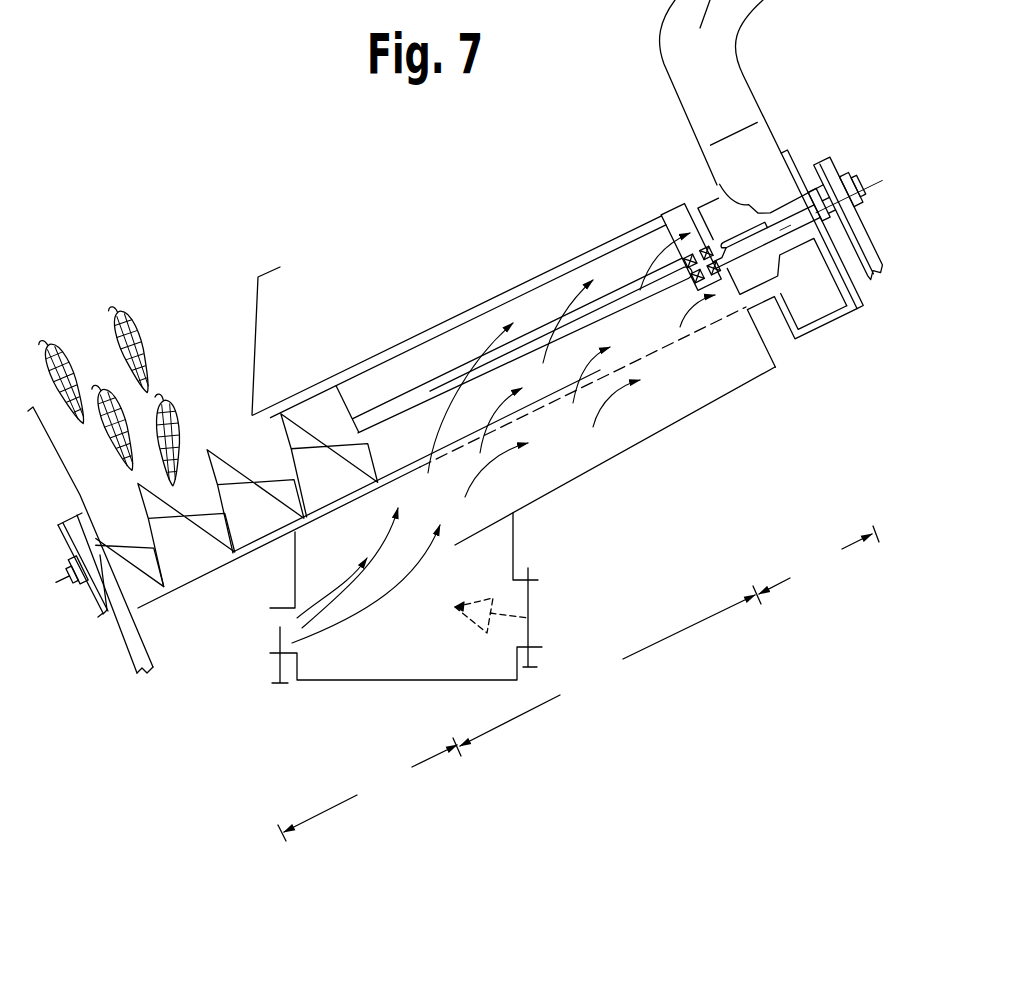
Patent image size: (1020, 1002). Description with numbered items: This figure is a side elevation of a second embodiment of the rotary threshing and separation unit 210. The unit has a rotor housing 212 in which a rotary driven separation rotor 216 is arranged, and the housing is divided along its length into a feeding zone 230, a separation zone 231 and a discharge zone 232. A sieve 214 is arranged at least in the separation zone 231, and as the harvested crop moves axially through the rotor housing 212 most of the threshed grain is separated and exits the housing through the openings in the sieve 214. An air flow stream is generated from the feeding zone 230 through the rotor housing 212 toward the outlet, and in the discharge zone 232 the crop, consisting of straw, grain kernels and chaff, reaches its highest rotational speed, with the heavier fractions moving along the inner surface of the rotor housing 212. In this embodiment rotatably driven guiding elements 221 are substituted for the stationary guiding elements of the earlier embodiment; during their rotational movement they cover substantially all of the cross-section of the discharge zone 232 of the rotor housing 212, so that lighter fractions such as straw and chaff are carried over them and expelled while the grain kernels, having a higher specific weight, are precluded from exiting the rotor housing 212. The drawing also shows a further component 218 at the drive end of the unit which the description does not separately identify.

The rotary threshing and separation unit 210 is at (338, 280).
The rotor housing 212 is at (517, 287).
The sieve 214 is at (547, 410).
The separation rotor 216 is at (400, 400).
The end plate 218 is at (773, 200).
The rotatably driven guiding elements 221 is at (722, 213).
The feeding zone 230 is at (369, 789).
The separation zone 231 is at (610, 666).
The discharge zone 232 is at (819, 560).